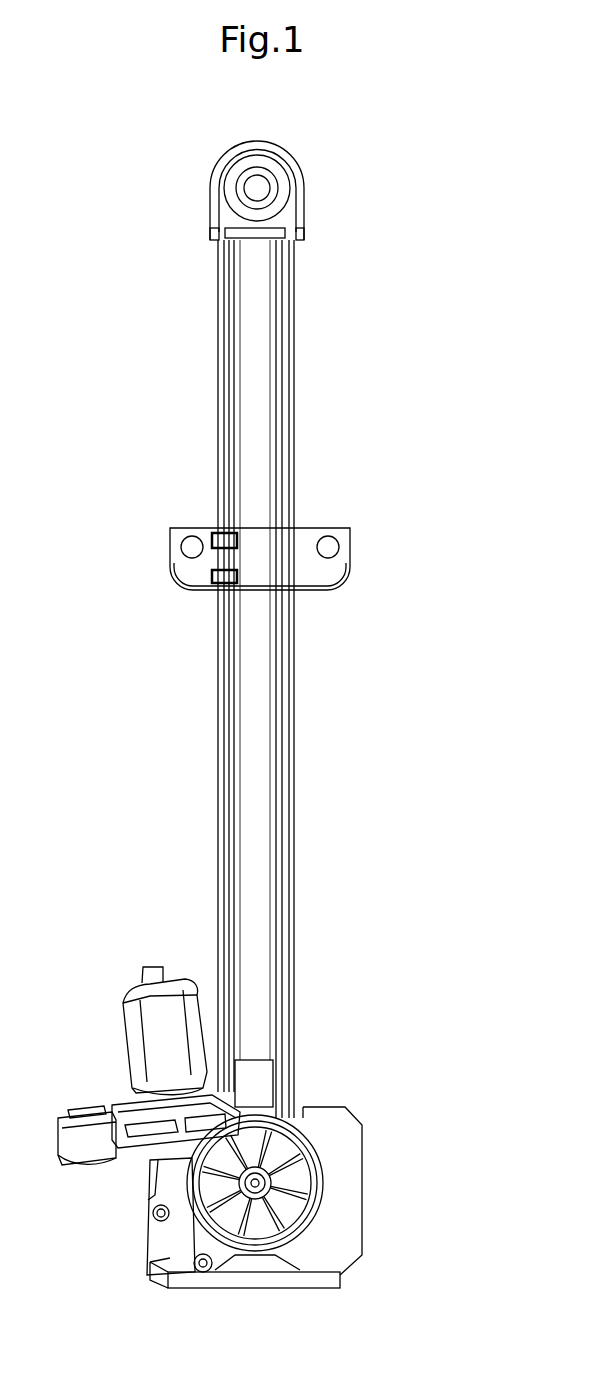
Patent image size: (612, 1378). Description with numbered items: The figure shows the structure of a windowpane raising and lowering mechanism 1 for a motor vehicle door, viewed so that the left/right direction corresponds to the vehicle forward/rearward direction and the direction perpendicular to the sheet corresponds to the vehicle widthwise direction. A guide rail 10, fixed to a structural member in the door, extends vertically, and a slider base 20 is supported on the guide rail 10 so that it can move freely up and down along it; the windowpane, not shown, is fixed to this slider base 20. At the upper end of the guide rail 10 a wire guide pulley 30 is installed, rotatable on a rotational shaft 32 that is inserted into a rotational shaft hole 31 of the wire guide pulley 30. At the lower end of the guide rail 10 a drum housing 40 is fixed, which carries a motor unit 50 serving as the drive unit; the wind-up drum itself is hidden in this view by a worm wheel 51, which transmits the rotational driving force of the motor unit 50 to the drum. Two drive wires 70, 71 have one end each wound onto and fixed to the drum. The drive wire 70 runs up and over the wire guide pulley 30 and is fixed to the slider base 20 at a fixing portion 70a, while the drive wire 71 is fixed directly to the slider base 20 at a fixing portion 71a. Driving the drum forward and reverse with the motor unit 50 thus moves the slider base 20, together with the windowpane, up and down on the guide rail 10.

The windowpane raising and lowering mechanism 1 is at (138, 416).
The guide rail 10 is at (258, 322).
The slider base 20 is at (338, 563).
The wire guide pulley 30 is at (277, 172).
The rotational shaft hole 31 is at (257, 178).
The rotational shaft 32 is at (250, 185).
The drum housing 40 is at (343, 1231).
The motor unit 50 is at (165, 1040).
The worm wheel 51 is at (300, 1182).
The drive wire 70 is at (287, 424).
The fixing portion 70a is at (213, 537).
The drive wire 71 is at (216, 776).
The fixing portion 71a is at (213, 578).